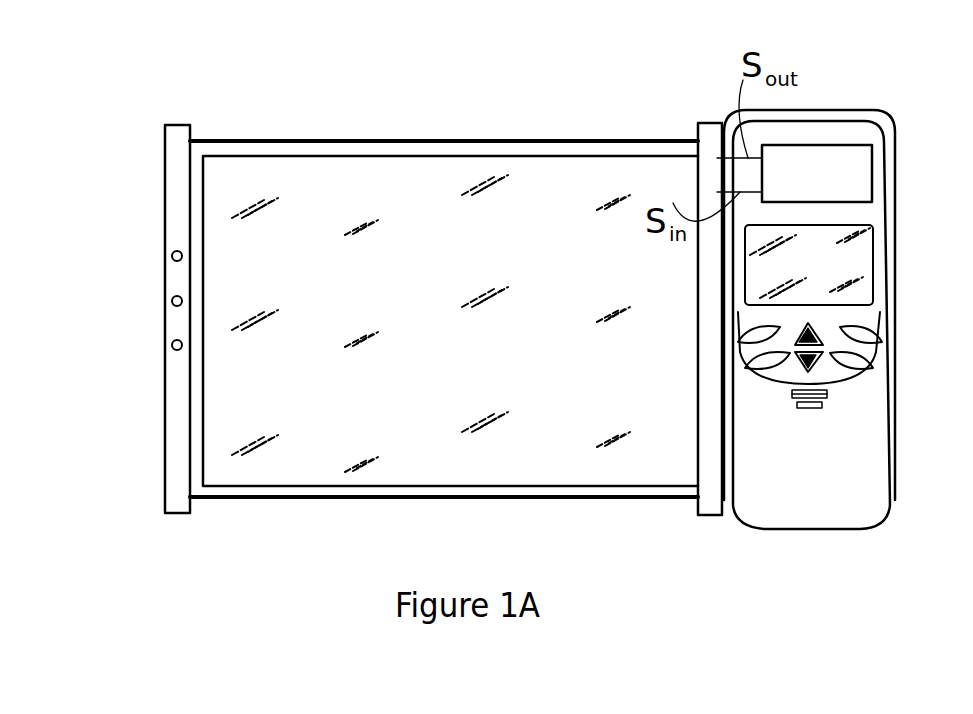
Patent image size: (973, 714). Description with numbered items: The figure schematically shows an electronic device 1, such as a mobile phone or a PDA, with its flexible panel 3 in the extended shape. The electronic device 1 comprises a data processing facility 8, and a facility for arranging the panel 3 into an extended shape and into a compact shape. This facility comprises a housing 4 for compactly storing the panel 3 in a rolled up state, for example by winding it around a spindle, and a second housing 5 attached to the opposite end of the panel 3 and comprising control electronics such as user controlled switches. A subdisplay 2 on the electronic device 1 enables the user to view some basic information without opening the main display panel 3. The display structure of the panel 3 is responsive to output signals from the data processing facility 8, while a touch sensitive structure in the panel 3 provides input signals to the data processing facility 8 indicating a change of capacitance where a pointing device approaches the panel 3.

The electronic device 1 is at (898, 388).
The subdisplay 2 is at (867, 270).
The flexible panel 3 is at (438, 170).
The housing 4 is at (710, 123).
The second housing 5 is at (177, 124).
The data processing facility 8 is at (847, 168).